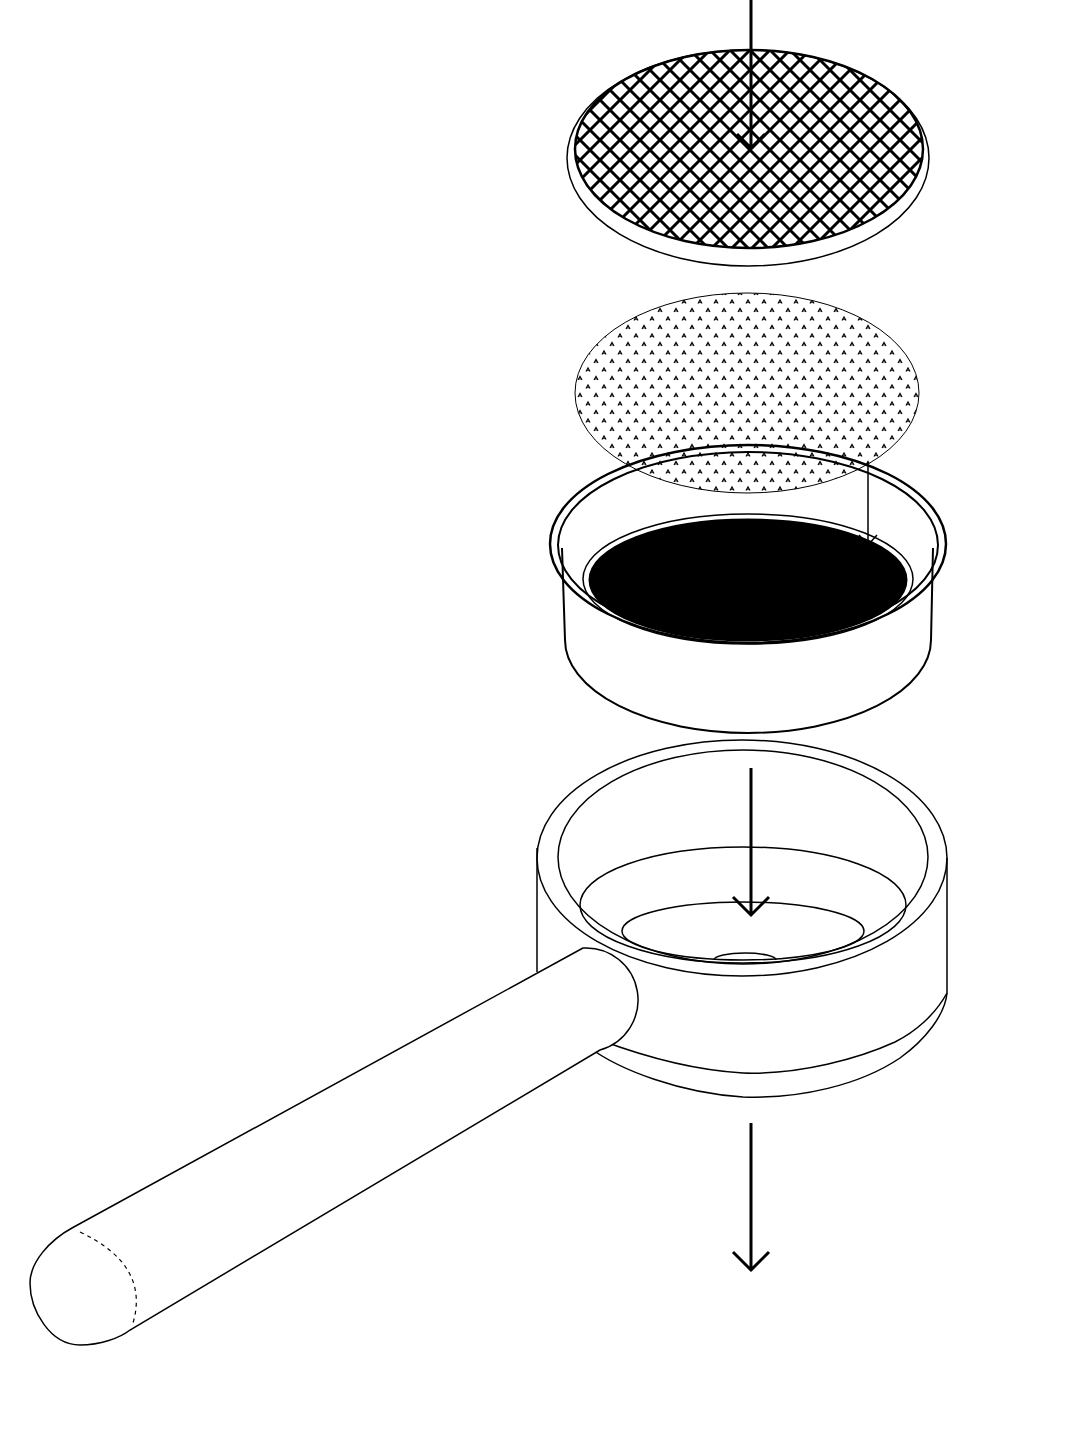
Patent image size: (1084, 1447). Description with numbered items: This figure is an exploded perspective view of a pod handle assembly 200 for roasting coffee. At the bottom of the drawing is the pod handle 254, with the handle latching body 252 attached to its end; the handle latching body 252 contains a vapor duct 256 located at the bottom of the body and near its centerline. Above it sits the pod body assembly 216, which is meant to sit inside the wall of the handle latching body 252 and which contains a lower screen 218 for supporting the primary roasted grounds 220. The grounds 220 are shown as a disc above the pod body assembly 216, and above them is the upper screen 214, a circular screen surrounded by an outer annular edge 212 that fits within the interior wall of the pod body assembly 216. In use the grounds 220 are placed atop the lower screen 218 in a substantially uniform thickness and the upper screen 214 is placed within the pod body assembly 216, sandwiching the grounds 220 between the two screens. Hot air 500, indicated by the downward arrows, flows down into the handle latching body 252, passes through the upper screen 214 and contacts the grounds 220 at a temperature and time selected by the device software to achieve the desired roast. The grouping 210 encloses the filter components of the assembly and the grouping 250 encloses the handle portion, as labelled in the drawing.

The pod handle assembly 200 is at (305, 183).
The filter assembly 210 is at (432, 425).
The outer annular edge 212 is at (528, 138).
The upper screen 214 is at (650, 64).
The pod body assembly 216 is at (560, 618).
The lower screen 218 is at (615, 547).
The primary roasted grounds 220 is at (615, 352).
The portafilter 250 is at (432, 917).
The handle latching body 252 is at (538, 905).
The pod handle 254 is at (312, 1102).
The vapor duct 256 is at (738, 953).
The hot air 500 is at (747, 33).